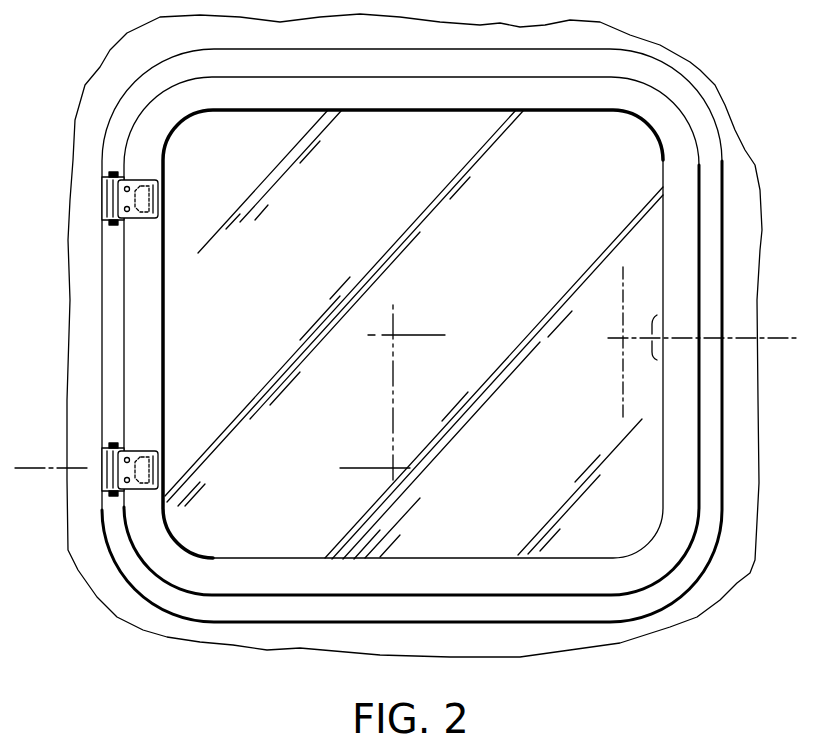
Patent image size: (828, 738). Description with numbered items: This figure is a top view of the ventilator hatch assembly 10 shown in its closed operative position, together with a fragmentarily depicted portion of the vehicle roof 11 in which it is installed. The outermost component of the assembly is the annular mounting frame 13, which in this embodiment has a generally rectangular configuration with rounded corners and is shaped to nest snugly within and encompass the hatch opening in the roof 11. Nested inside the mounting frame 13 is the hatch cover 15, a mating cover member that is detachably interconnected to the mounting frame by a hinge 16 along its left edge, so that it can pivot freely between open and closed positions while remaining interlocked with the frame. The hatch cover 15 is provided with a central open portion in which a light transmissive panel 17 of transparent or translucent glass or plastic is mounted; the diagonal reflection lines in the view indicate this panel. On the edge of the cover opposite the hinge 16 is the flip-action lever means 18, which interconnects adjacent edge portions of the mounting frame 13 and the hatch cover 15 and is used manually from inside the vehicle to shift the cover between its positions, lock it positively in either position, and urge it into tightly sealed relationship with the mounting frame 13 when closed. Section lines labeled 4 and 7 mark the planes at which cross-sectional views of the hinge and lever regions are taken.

The ventilator hatch assembly 10 is at (596, 40).
The roof 11 is at (331, 44).
The mounting frame 13 is at (441, 76).
The hatch cover 15 is at (507, 107).
The hinge 16 is at (146, 230).
The light transmissive panel 17 is at (642, 245).
The flip-action lever means 18 is at (655, 332).
The section line 4- 4 is at (646, 290).
The section line 7- 7 is at (780, 304).